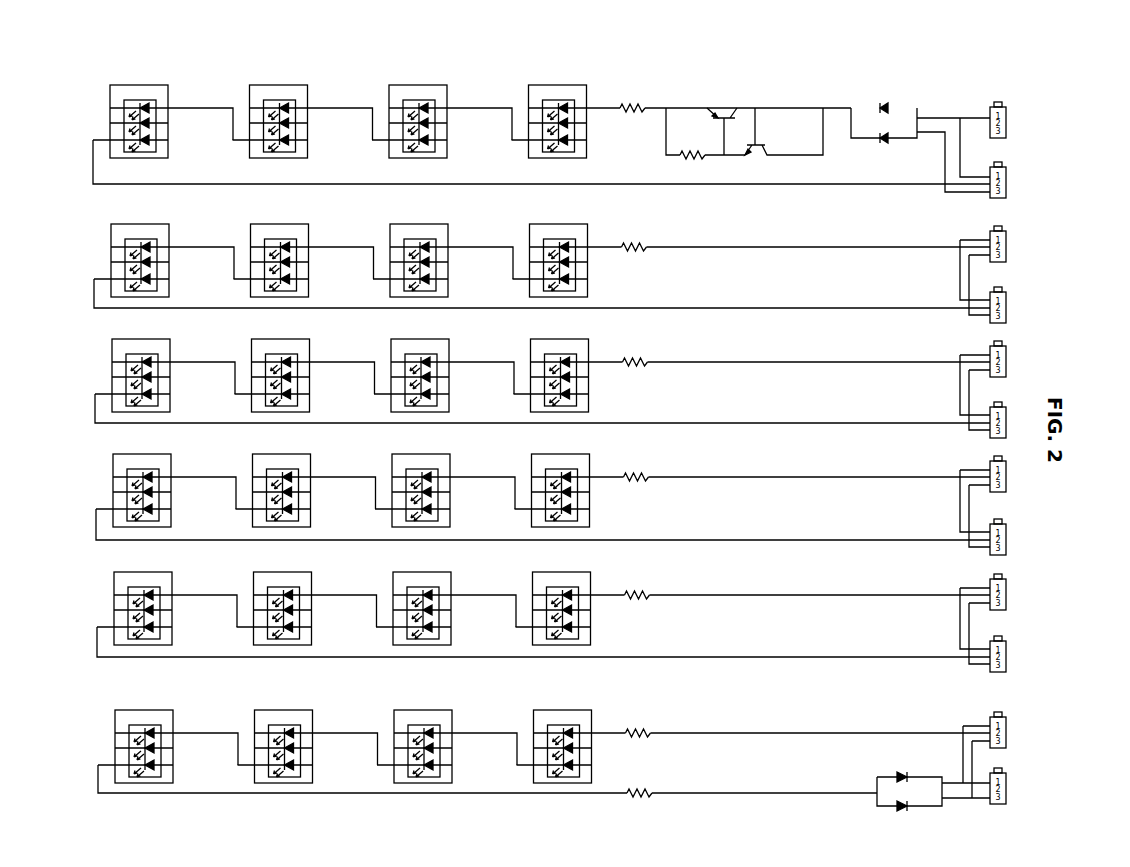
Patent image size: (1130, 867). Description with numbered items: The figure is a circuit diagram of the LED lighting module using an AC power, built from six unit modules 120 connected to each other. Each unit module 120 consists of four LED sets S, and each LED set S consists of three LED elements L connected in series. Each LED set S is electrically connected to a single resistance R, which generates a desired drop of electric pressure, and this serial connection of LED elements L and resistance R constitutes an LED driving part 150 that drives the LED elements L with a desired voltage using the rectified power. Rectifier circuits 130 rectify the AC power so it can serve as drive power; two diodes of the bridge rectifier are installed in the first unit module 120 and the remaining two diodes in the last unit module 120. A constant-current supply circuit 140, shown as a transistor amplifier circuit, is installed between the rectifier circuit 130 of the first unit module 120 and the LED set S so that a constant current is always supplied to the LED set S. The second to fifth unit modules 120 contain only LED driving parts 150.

The unit module 120 is at (96, 89).
The LED set S is at (403, 101).
The LED element L is at (433, 104).
The resistance R is at (638, 107).
The constant-current supply circuit 140 is at (758, 142).
The rectifier circuit 130 is at (904, 97).
The LED driving part 150 is at (614, 225).